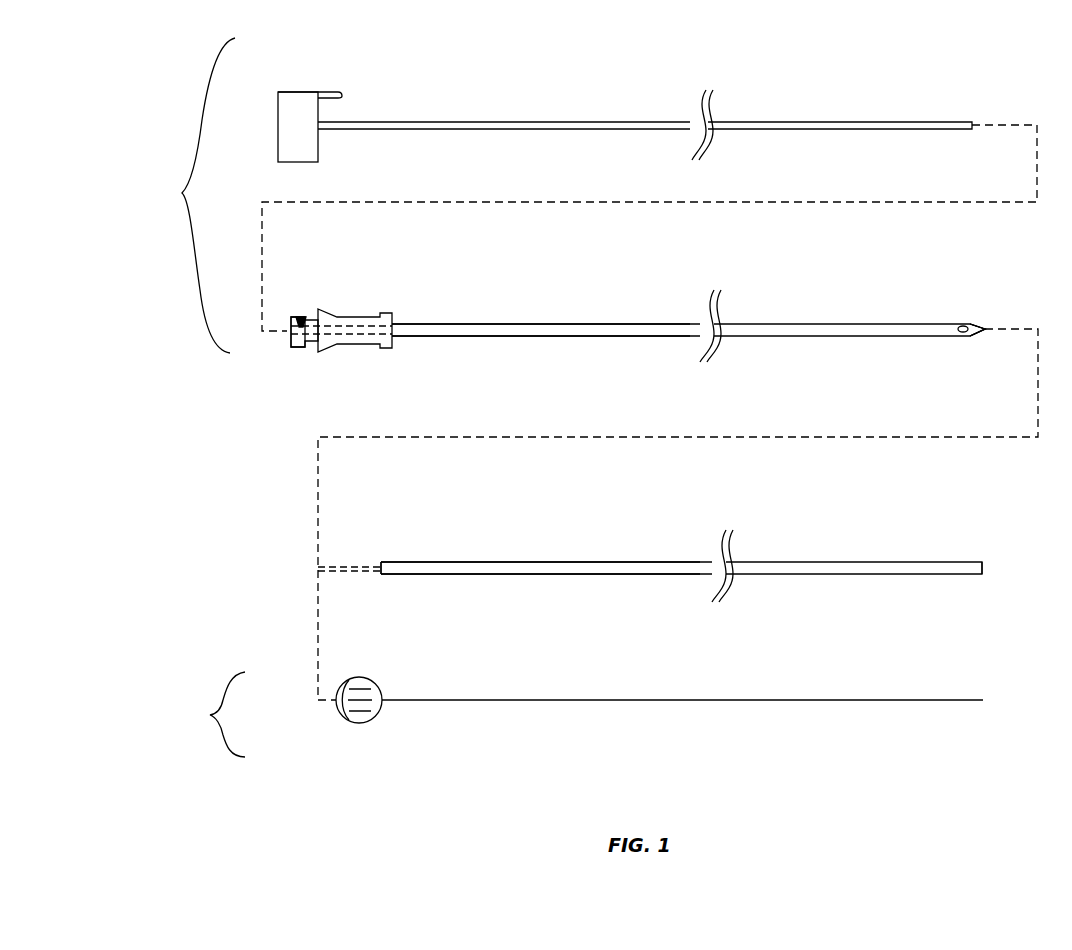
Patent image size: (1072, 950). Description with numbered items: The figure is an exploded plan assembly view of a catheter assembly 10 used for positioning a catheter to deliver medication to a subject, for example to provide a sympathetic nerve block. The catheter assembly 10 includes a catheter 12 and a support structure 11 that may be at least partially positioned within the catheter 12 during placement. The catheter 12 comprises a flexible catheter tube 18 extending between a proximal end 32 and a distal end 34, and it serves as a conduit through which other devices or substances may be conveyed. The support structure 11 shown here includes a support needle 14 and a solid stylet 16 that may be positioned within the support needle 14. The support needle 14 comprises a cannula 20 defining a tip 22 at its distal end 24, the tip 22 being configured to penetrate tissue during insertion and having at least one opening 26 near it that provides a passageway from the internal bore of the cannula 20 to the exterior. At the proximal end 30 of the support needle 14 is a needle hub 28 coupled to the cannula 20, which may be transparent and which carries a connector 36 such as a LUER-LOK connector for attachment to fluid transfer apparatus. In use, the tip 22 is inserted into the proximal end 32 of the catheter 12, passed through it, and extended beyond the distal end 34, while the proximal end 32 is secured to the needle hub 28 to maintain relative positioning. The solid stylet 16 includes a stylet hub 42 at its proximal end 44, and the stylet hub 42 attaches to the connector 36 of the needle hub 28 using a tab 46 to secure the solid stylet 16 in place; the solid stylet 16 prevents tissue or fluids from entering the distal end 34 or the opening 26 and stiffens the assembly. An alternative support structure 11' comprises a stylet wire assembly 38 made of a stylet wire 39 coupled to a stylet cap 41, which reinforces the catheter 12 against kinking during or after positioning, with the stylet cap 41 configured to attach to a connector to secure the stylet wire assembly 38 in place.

The catheter assembly 10 is at (170, 494).
The support structure 11 is at (193, 195).
The support structure 11' is at (208, 714).
The catheter 12 is at (822, 555).
The support needle 14 is at (760, 310).
The solid stylet 16 is at (865, 117).
The flexible catheter tube 18 is at (565, 561).
The cannula 20 is at (527, 333).
The tip 22 is at (985, 321).
The distal end 24 is at (995, 322).
The opening 26 is at (964, 333).
The needle hub 28 is at (328, 312).
The proximal end 30 is at (287, 340).
The proximal end 32 is at (378, 565).
The distal end 34 is at (993, 565).
The connector 36 is at (300, 316).
The stylet wire assembly 38 is at (600, 690).
The stylet wire 39 is at (845, 699).
The stylet cap 41 is at (347, 712).
The stylet hub 42 is at (300, 92).
The proximal end 44 is at (275, 127).
The tab 46 is at (340, 94).